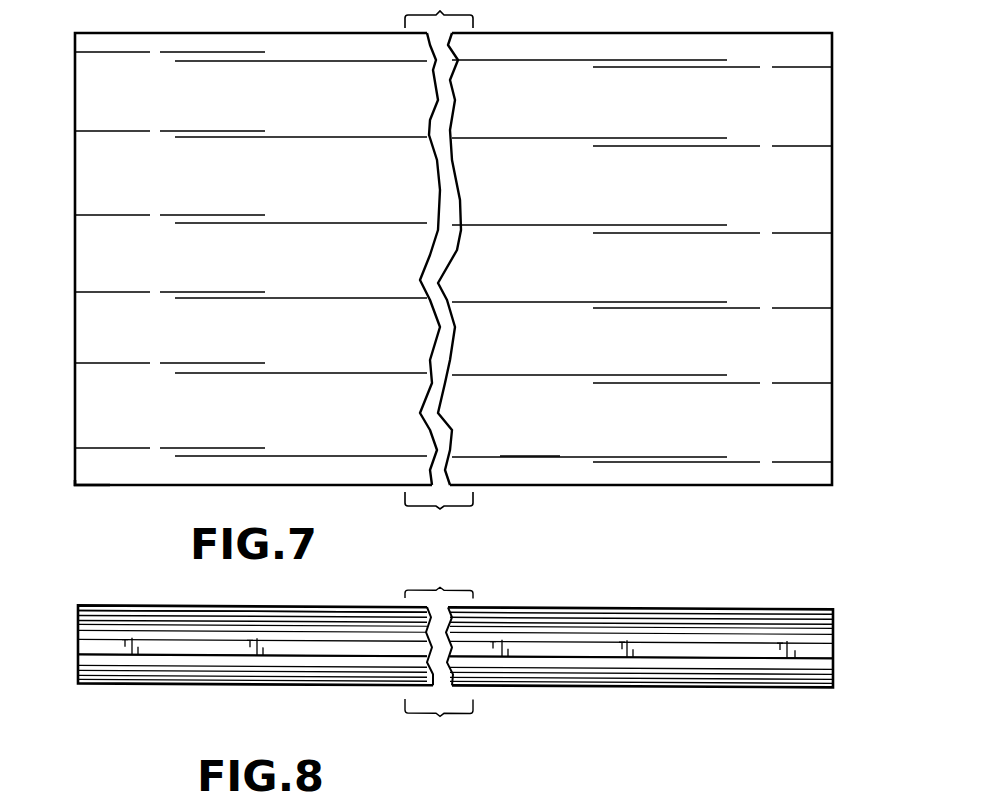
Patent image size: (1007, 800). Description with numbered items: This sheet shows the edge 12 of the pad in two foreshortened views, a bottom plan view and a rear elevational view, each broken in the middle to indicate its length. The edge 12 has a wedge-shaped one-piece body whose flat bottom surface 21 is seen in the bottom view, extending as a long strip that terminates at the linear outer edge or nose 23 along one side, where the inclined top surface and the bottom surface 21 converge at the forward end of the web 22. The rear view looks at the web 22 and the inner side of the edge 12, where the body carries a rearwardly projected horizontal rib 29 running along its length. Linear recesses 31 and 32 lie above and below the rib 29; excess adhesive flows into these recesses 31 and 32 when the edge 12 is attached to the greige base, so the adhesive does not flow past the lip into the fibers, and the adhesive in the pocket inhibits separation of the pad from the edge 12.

In FIG. 7, the edge 12 is at (778, 33).
In FIG. 8, the edge 12 is at (486, 642).
In FIG. 7, the flat bottom surface 21 is at (518, 438).
In FIG. 8, the web 22 is at (762, 680).
In FIG. 7, the linear outer edge or nose 23 is at (105, 488).
In FIG. 8, the horizontal rib 29 is at (823, 645).
In FIG. 8, the linear recess 31 is at (537, 637).
In FIG. 8, the linear recess 32 is at (607, 657).